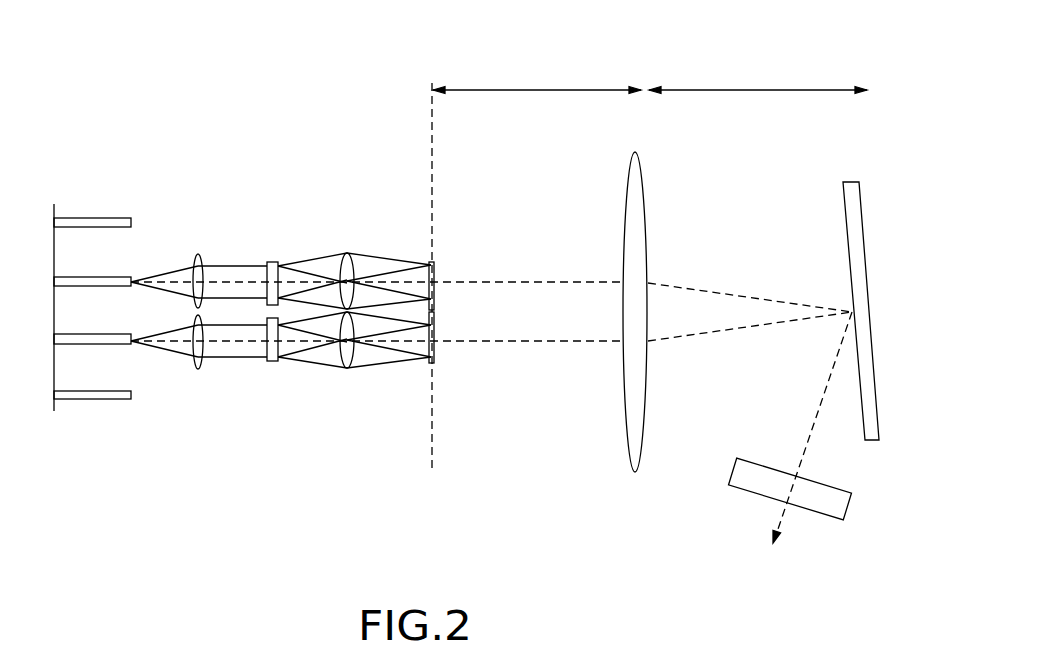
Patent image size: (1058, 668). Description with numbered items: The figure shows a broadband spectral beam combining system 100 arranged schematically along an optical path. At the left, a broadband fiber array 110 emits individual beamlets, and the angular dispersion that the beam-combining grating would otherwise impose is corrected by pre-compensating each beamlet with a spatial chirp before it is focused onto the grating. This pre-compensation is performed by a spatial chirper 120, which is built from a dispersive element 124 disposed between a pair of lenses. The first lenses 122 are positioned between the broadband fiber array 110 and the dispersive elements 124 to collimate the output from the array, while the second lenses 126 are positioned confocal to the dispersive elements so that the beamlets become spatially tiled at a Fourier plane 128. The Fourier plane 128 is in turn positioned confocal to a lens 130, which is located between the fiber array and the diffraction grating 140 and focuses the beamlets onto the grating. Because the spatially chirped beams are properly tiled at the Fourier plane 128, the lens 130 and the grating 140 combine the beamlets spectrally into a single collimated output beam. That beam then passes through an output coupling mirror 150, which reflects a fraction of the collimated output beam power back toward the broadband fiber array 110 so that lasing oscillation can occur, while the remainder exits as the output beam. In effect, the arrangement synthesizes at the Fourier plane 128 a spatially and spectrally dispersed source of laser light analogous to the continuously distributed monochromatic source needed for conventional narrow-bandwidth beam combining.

The broadband SBC system 100 is at (242, 53).
The broadband fiber array 110 is at (103, 194).
The spatial chirper 120 is at (260, 452).
The lenses (f1) 122 is at (174, 307).
The dispersive element 124 is at (264, 252).
The lenses (f2) 126 is at (336, 240).
The Fourier plane 128 is at (432, 157).
The lens 130 is at (630, 160).
The diffraction grating 140 is at (843, 188).
The output coupling mirror 150 is at (818, 483).